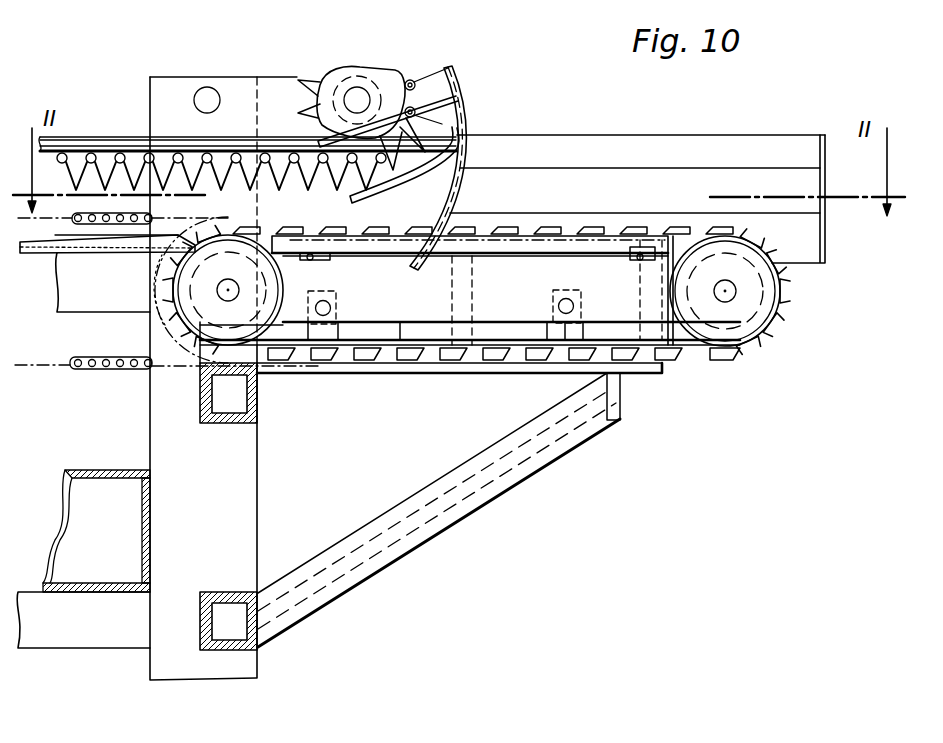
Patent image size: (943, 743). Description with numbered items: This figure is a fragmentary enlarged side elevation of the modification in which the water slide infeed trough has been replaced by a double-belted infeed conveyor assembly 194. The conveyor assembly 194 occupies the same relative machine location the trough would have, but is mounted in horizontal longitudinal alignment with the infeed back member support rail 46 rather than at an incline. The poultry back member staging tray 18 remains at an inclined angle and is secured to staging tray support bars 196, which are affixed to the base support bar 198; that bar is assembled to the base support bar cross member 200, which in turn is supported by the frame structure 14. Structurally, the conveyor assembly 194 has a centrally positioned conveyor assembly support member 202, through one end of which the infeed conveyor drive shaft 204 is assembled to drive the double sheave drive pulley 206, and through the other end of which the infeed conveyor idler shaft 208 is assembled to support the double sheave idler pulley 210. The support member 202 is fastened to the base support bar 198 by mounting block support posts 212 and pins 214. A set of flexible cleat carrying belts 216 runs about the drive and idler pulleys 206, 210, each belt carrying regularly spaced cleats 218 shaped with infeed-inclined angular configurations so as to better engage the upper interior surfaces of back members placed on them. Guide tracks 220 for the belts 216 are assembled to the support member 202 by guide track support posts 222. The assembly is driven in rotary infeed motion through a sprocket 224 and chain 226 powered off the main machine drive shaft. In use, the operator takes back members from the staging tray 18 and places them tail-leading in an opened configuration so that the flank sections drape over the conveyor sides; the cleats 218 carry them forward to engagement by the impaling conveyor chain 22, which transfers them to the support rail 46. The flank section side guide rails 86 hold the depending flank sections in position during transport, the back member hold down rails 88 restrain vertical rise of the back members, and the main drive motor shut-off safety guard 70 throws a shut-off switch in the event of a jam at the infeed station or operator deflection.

The frame structure 14 is at (460, 600).
The poultry back member staging tray 18 is at (668, 135).
The impaling conveyor chain 22 is at (135, 158).
The infeed back member support rail 46 is at (68, 315).
The main drive motor shut-off safety guard 70 is at (466, 112).
The flank section side guide rails 86 is at (77, 243).
The back member hold down rails 88 is at (78, 136).
The infeed conveyor assembly 194 is at (586, 113).
The poultry back member staging tray support bars 196 is at (450, 330).
The base support bar 198 is at (375, 374).
The base support bar cross member 200 is at (240, 425).
The conveyor assembly support member 202 is at (407, 330).
The infeed conveyor drive shaft 204 is at (217, 298).
The infeed conveyor belts double sheave drive pulley 206 is at (262, 335).
The infeed conveyor idler shaft 208 is at (736, 292).
The infeed conveyor belts double sheave idler pulley 210 is at (779, 310).
The mounting block support posts 212 is at (350, 340).
The pins 214 is at (331, 308).
The flexible cleat carrying belts 216 is at (703, 352).
The cleats 218 is at (502, 228).
The guide tracks 220 is at (353, 240).
The guide track support posts 222 is at (322, 258).
The sprocket 224 is at (168, 324).
The chain 226 is at (108, 368).